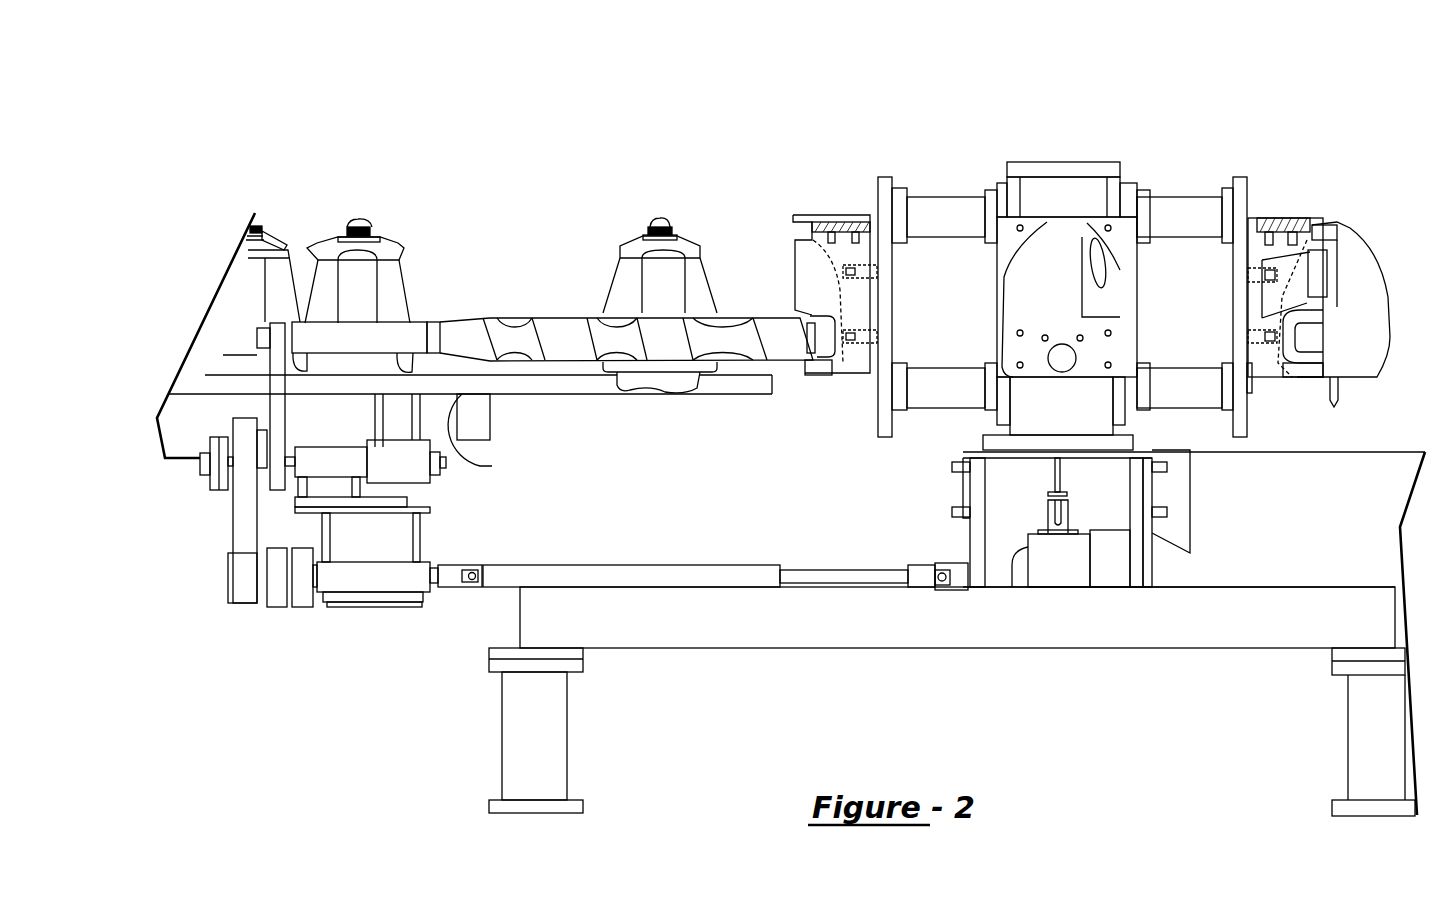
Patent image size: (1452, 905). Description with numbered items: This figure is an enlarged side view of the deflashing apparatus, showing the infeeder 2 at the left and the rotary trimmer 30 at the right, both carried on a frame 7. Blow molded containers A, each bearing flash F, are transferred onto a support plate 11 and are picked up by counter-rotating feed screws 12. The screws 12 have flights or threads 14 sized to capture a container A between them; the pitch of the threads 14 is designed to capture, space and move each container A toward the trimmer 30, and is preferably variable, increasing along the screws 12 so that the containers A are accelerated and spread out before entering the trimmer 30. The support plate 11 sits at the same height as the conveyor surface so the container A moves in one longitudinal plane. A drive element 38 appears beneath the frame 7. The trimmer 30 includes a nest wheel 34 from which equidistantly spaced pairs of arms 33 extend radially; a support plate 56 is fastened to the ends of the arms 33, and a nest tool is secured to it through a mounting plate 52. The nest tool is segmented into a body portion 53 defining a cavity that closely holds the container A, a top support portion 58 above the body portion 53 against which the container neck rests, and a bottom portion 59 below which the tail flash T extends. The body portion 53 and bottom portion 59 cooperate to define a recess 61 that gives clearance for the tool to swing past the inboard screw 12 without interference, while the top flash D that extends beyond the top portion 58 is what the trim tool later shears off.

The infeeder 2 is at (371, 186).
The frame 7 is at (803, 620).
The support plate 11 is at (555, 382).
The feed screws 12 is at (478, 328).
The screw threads 14 is at (774, 326).
The rotary trimmer 30 is at (1138, 153).
The arms 33 is at (948, 207).
The nest wheel 34 is at (998, 181).
The drive shaft 38 is at (703, 575).
The mounting plate 52 is at (1250, 378).
The body portion 53 is at (1318, 280).
The support plate 56 is at (1243, 190).
The top support portion 58 is at (1285, 226).
The bottom portion 59 is at (1305, 369).
The recess 61 is at (818, 316).
The container A is at (358, 274).
The flash F is at (658, 213).
The top flash D is at (1336, 226).
The tail flash T is at (683, 382).